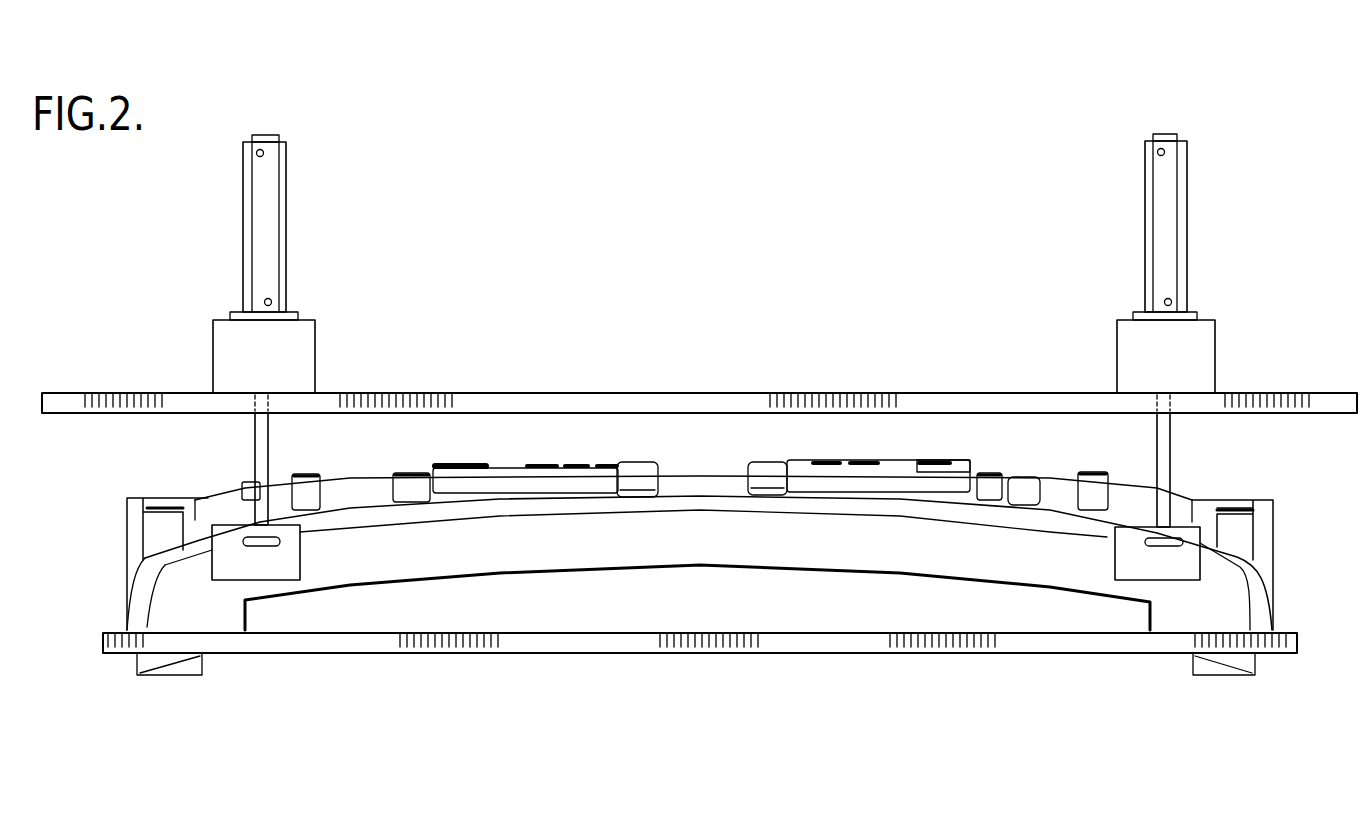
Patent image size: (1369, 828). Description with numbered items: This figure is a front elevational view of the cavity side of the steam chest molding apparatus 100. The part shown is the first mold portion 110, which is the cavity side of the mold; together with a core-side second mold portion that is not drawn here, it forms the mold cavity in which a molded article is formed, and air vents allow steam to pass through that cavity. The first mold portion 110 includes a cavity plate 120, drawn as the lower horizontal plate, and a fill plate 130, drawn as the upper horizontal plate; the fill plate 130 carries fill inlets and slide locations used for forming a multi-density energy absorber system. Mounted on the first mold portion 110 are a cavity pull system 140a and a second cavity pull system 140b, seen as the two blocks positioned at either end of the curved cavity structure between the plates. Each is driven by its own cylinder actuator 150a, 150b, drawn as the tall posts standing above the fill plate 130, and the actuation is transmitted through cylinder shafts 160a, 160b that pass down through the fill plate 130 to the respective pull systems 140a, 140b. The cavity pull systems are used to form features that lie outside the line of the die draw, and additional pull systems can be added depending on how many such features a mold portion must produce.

The steam chest molding apparatus 100 is at (636, 107).
The first mold portion 110 is at (1288, 390).
The cavity plate 120 is at (768, 655).
The fill plate 130 is at (752, 396).
The cavity pull system 140a is at (1163, 568).
The second cavity pull system 140b is at (253, 563).
The cylinder actuator 150a is at (1170, 188).
The cylinder actuator 150b is at (273, 181).
The cylinder shaft 160a is at (1168, 440).
The cylinder shaft 160b is at (260, 448).